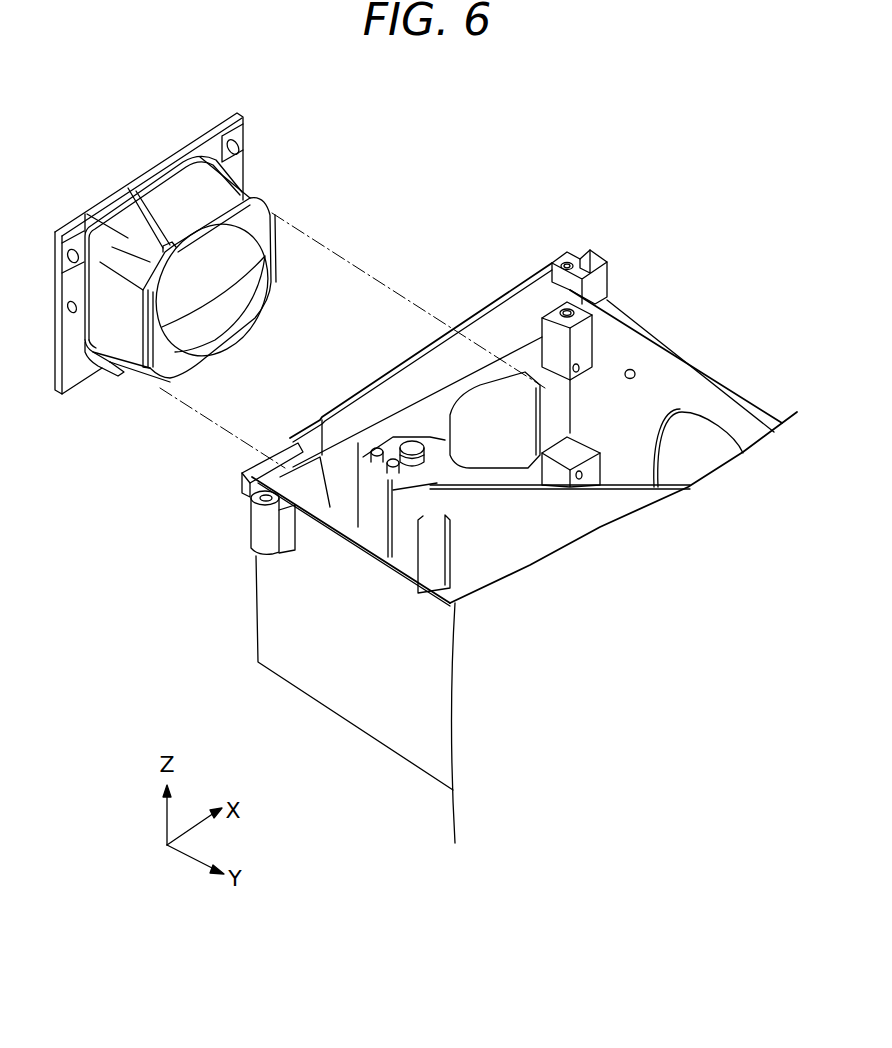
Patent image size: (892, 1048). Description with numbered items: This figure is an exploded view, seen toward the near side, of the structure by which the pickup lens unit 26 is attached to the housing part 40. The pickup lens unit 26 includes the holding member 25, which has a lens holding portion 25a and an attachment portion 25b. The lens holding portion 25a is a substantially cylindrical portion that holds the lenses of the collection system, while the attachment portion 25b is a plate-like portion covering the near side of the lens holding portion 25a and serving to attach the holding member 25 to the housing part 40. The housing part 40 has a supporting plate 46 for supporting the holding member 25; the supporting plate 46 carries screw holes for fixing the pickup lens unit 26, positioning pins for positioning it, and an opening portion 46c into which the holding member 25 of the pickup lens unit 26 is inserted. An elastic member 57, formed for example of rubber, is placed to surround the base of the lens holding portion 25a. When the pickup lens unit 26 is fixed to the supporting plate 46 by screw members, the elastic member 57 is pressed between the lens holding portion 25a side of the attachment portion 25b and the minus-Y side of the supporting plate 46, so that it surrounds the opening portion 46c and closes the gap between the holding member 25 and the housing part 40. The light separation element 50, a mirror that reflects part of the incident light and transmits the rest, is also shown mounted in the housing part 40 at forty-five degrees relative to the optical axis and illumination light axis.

The holding member 25 is at (48, 104).
The lens holding portion 25a is at (150, 212).
The attachment portion 25b is at (83, 213).
The pickup lens unit 26 is at (265, 192).
The housing part 40 is at (708, 373).
The supporting plate 46 is at (558, 402).
The opening portion 46c is at (445, 410).
The light separation element 50 is at (558, 518).
The elastic member 57 is at (102, 357).